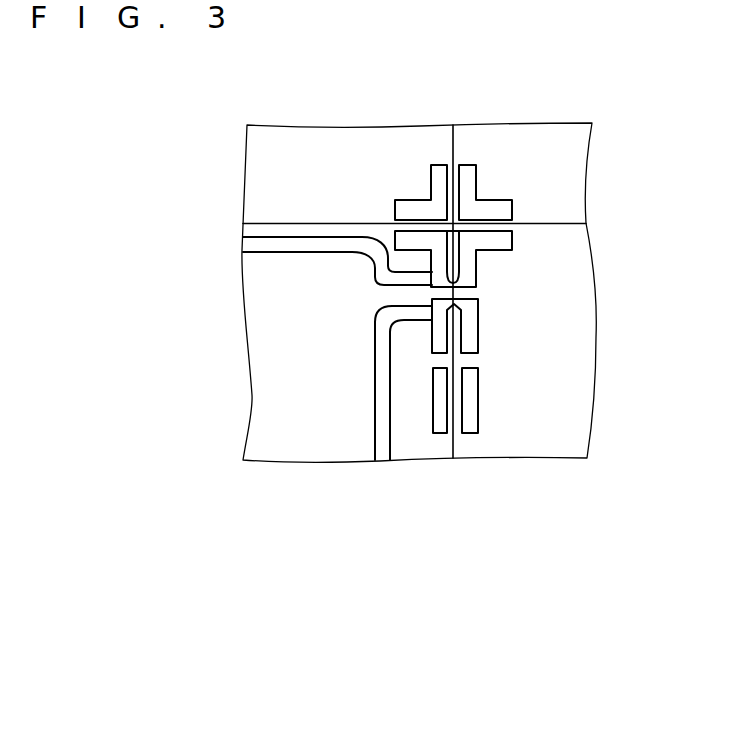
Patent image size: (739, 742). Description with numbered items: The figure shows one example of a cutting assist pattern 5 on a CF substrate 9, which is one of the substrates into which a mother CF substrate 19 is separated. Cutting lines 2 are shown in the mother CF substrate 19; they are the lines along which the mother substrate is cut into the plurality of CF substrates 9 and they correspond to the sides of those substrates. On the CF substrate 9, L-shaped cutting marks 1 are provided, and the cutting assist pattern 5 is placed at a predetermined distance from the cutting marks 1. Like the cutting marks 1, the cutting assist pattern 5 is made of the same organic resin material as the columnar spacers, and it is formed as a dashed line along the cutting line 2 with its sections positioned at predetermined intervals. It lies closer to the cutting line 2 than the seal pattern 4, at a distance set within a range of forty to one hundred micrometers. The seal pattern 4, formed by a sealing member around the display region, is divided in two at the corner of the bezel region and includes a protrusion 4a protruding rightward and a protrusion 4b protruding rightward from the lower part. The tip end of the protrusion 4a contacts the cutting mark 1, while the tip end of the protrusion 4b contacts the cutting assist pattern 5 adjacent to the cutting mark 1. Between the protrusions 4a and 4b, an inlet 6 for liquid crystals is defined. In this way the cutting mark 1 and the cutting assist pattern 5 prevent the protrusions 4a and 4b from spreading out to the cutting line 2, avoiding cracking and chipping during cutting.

The cutting mark 1 is at (440, 268).
The cutting line 2 is at (273, 223).
The seal pattern 4 is at (337, 320).
The protrusion 4a is at (413, 277).
The protrusion 4b is at (418, 314).
The cutting assist pattern 5 is at (438, 343).
The inlet 6 is at (380, 295).
The CF substrate 9 is at (573, 337).
The mother CF substrate 19 is at (331, 117).